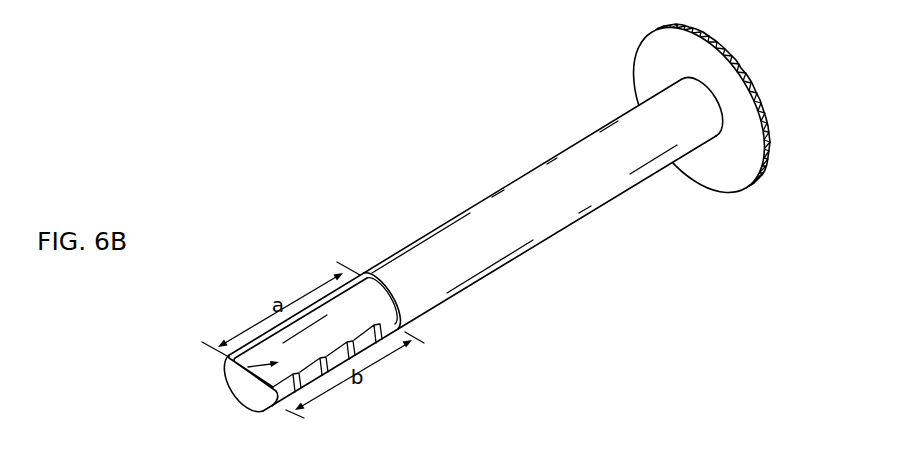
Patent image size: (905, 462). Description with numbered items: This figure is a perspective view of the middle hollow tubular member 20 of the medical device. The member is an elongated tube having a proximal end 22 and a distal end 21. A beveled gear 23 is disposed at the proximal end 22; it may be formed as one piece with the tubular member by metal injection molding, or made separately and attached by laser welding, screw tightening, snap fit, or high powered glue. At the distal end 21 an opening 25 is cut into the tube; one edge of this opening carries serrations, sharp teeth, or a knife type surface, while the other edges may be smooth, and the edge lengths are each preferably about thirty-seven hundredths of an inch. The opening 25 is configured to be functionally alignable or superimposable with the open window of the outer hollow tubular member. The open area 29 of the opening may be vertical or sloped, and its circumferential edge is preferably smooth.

The middle hollow tubular member 20 is at (501, 220).
The distal end 21 is at (421, 310).
The proximal end 22 is at (683, 143).
The beveled gear 23 is at (763, 113).
The opening 25 is at (248, 369).
The open area 29 is at (388, 299).